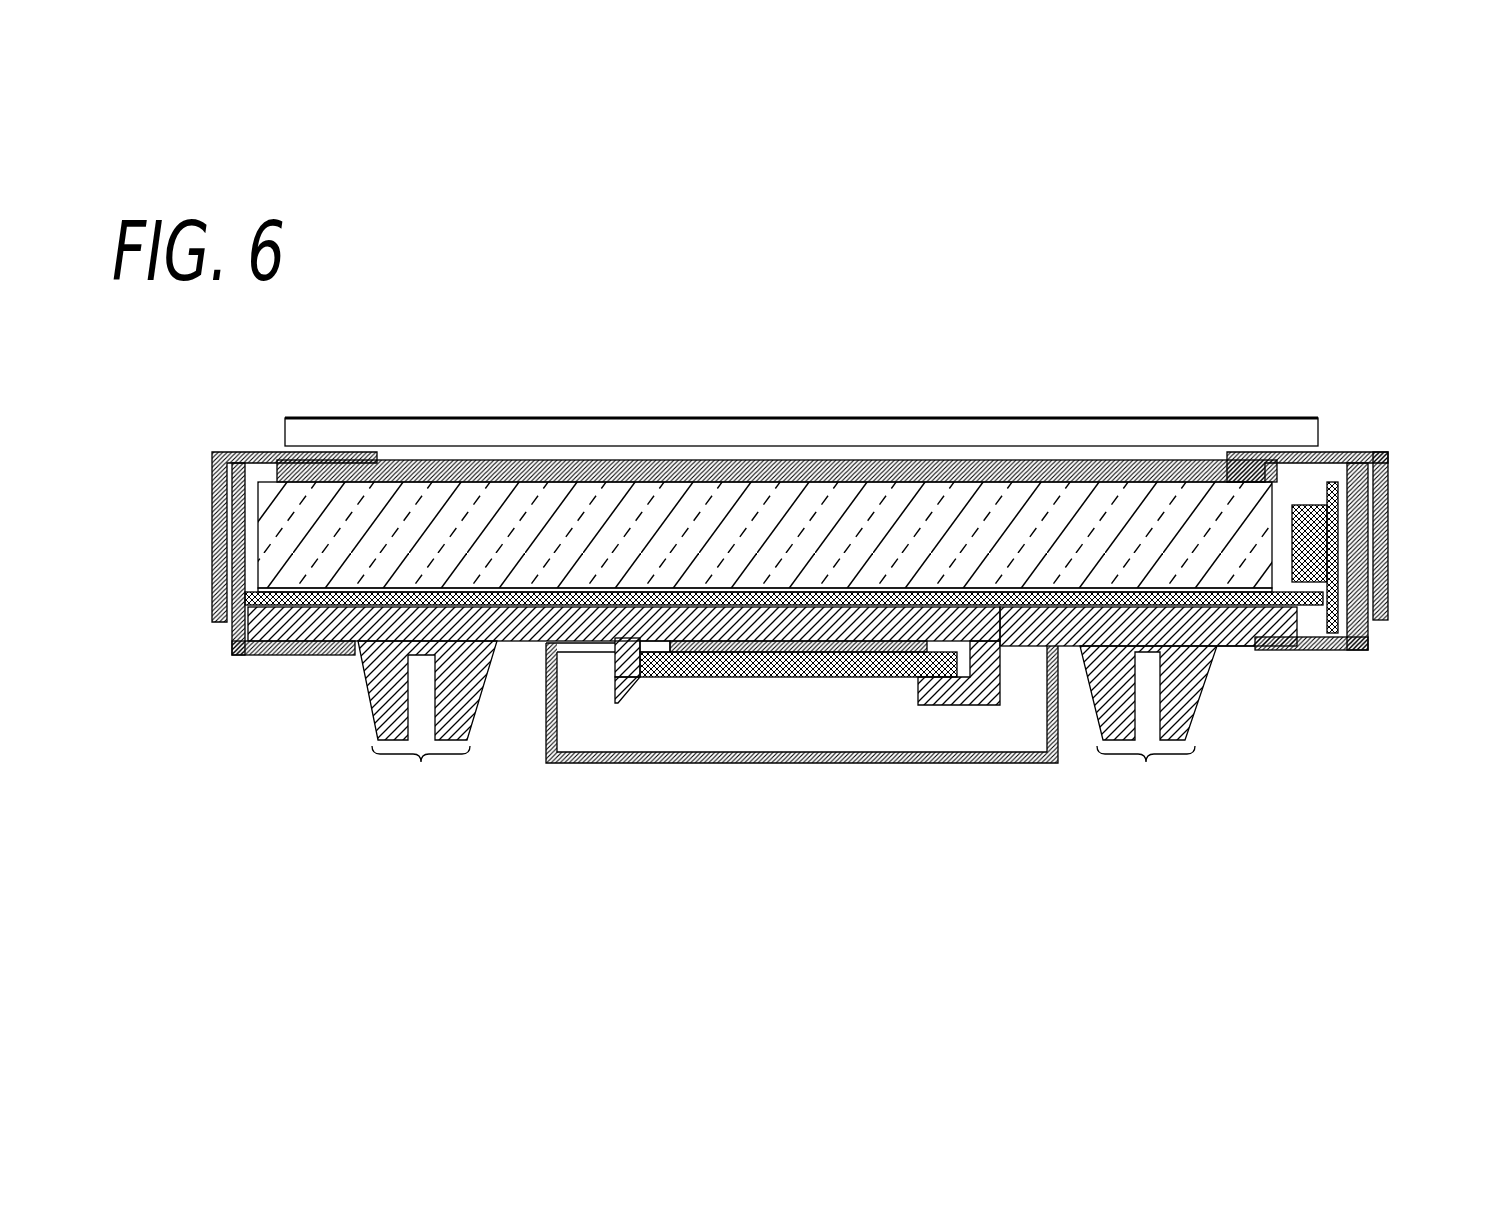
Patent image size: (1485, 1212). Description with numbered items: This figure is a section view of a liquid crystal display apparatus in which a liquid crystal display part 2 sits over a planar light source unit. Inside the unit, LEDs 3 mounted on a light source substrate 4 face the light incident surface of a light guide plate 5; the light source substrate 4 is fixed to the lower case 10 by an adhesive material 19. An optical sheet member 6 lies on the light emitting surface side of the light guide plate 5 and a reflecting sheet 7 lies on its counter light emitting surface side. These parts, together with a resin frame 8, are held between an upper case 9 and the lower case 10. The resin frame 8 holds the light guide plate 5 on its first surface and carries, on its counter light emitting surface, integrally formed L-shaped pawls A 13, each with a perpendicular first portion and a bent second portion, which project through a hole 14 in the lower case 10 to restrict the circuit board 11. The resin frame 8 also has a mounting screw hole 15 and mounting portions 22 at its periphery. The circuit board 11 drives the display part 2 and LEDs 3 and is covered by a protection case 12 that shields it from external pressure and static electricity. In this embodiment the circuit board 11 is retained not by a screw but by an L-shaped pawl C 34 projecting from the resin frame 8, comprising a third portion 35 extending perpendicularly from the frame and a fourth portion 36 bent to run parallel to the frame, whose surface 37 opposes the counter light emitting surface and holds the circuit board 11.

The liquid crystal display part 2 is at (1190, 418).
The LED 3 is at (1310, 505).
The light source substrate 4 is at (1332, 640).
The light guide plate 5 is at (707, 530).
The optical sheet member 6 is at (503, 462).
The reflecting sheet 7 is at (255, 597).
The resin frame 8 is at (1237, 646).
The upper case 9 is at (1390, 508).
The lower case 10 is at (232, 655).
The circuit board 11 is at (850, 677).
The protection case 12 is at (622, 763).
The L-shaped pawl A 13 is at (957, 705).
The hole 14 is at (965, 607).
The mounting screw hole 15 is at (370, 727).
The adhesive material 19 is at (1360, 452).
The mounting portion 22 is at (783, 779).
The L-shaped pawl C 34 is at (637, 702).
The third portion 35 is at (617, 680).
The fourth portion 36 is at (643, 683).
The surface 37 is at (650, 677).